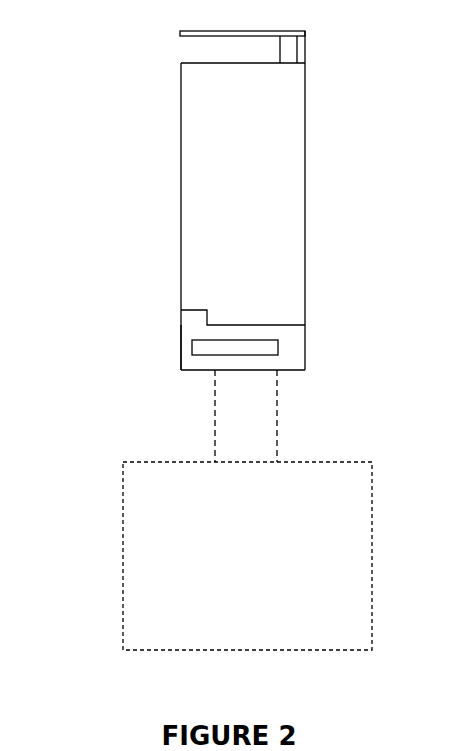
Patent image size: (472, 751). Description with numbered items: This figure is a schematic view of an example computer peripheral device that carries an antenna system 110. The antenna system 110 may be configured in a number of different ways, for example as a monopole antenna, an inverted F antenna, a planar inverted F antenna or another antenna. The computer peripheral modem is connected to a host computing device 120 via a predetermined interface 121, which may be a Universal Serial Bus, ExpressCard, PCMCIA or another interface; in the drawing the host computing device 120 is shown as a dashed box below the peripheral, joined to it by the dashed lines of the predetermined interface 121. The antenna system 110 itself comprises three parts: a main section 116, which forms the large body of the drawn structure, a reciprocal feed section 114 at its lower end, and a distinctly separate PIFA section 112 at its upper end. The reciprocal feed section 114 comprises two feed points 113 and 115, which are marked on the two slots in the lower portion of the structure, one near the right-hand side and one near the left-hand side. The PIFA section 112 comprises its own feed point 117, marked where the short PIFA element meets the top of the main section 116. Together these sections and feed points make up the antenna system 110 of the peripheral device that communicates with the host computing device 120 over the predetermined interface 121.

The antenna system 110 is at (226, 220).
The PIFA section 112 is at (148, 33).
The feed point 113 is at (298, 313).
The reciprocal feed section 114 is at (163, 335).
The feed point 115 is at (192, 345).
The main section 116 is at (318, 193).
The feed point 117 is at (278, 57).
The host computing device 120 is at (247, 556).
The predetermined interface 121 is at (246, 416).